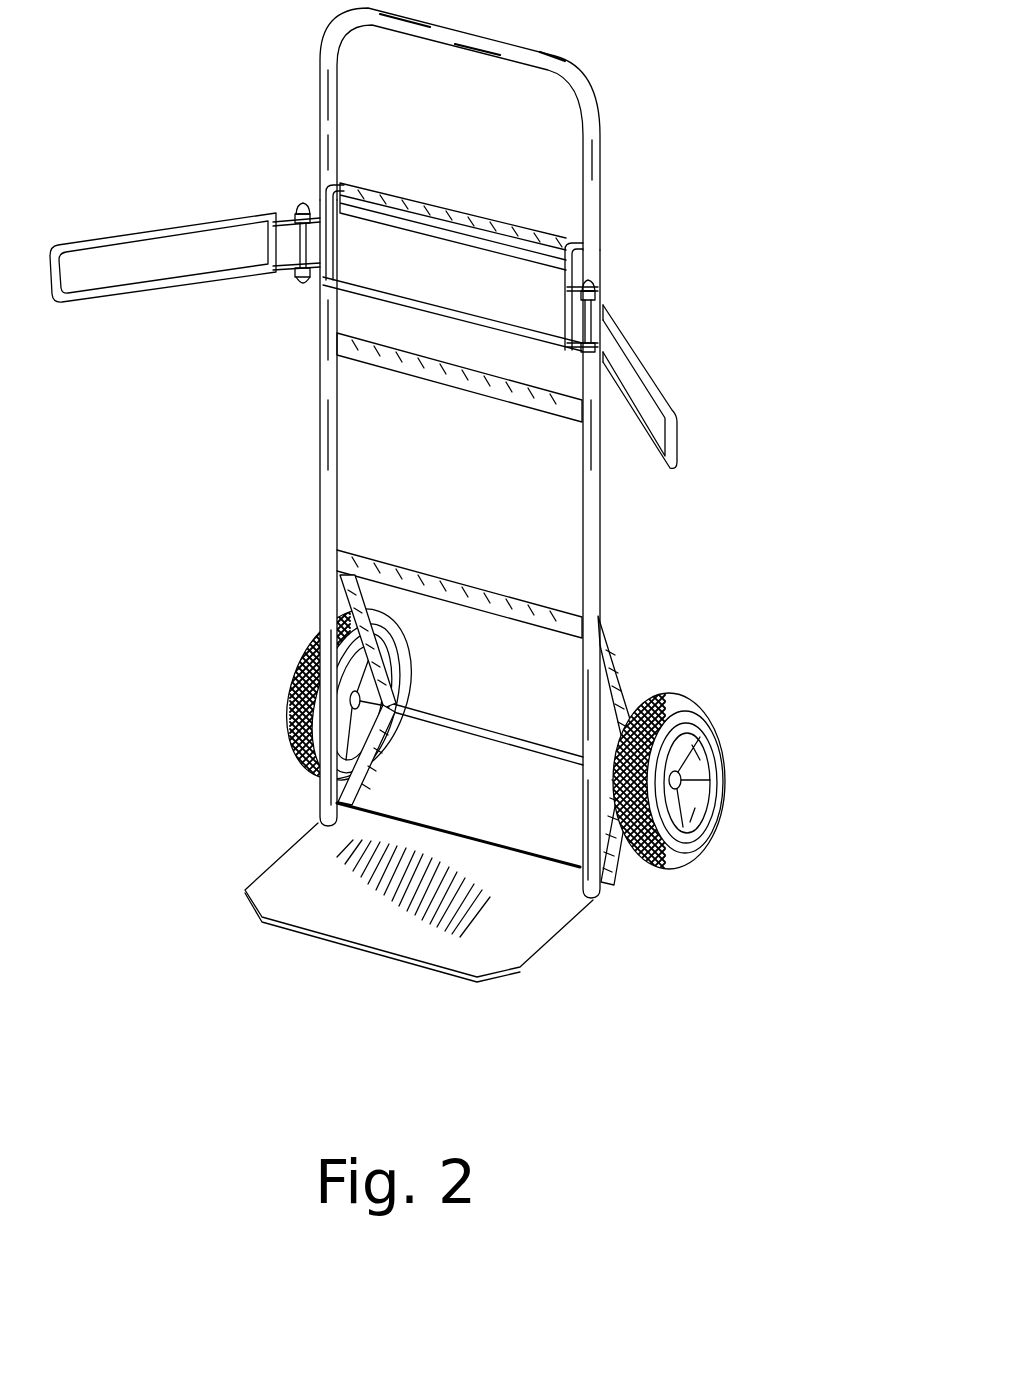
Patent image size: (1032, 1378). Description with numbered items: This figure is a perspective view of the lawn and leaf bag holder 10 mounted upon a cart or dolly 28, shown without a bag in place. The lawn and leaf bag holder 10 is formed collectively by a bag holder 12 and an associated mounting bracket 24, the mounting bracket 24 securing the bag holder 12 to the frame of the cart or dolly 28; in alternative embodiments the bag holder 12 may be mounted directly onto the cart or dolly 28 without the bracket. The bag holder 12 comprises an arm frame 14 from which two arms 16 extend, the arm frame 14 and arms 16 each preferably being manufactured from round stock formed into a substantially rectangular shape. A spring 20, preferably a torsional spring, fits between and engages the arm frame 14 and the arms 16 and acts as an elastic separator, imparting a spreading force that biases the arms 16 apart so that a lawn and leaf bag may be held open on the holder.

The lawn and leaf bag holder 10 is at (700, 195).
The bag holder 12 is at (670, 407).
The arm frame 14 is at (316, 282).
The arms 16 is at (582, 316).
The spring 20 is at (296, 211).
The mounting bracket 24 is at (437, 192).
The cart or dolly 28 is at (602, 621).